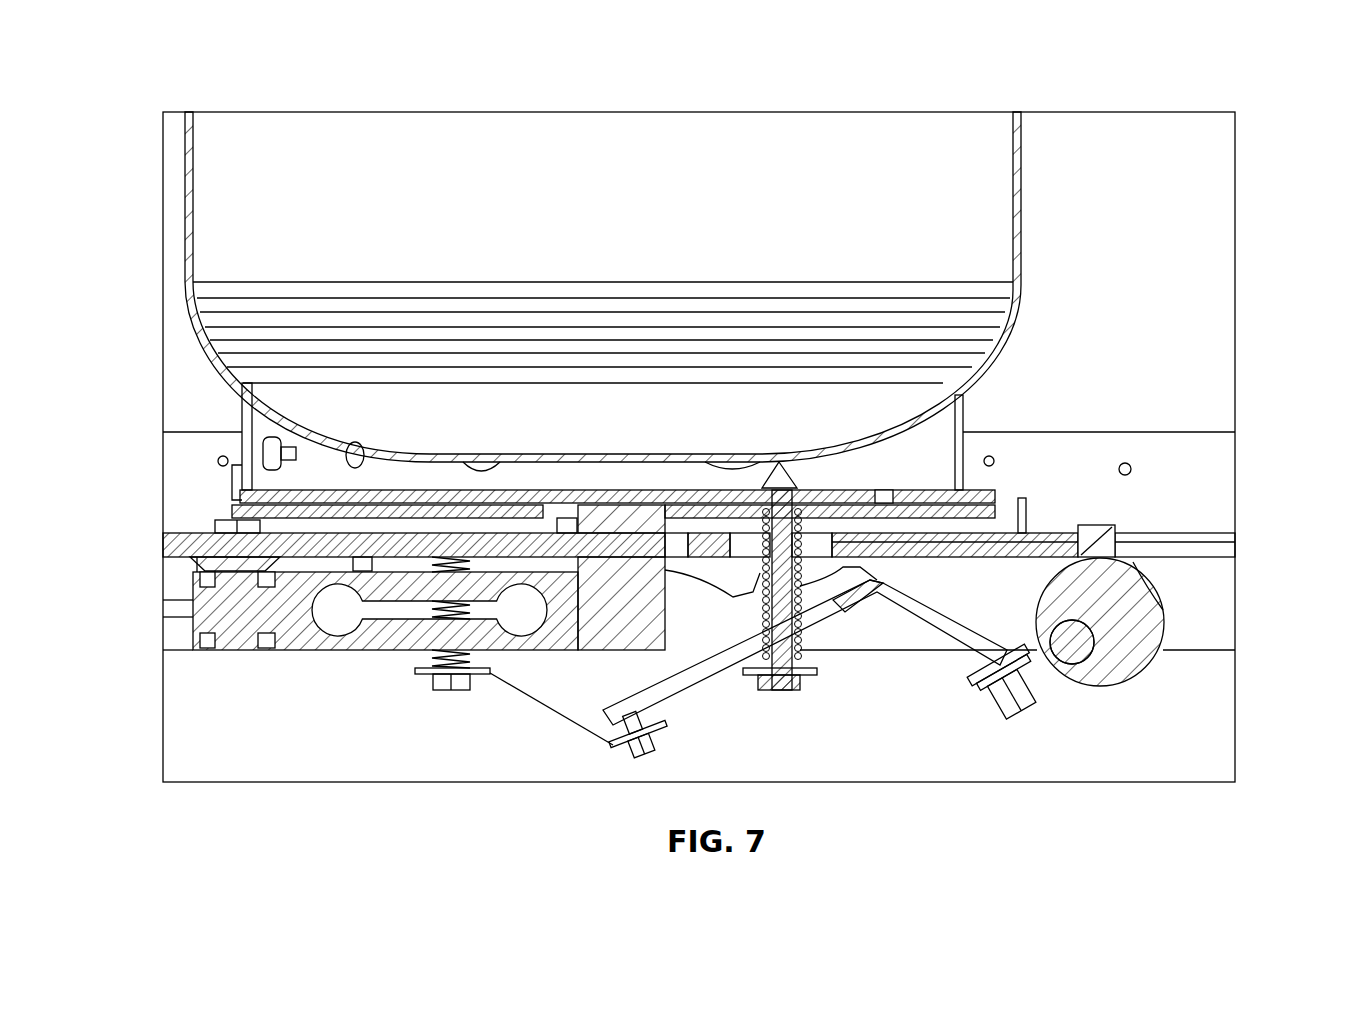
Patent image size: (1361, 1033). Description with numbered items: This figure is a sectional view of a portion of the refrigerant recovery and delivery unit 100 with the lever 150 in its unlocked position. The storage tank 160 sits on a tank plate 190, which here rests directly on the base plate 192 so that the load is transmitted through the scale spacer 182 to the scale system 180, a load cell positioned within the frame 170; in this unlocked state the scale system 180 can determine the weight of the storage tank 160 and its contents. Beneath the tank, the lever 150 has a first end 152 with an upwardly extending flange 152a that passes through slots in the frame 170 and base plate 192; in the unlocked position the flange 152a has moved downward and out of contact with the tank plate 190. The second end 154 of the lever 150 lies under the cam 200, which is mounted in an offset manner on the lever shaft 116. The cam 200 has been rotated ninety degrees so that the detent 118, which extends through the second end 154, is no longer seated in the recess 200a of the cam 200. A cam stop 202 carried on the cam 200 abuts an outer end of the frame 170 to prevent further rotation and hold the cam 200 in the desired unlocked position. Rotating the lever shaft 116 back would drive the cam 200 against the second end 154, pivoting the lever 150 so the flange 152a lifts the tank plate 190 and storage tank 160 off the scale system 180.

The refrigerant recovery and delivery unit 100 is at (1055, 152).
The storage tank 160 is at (1022, 252).
The tank plate 190 is at (373, 496).
The base plate 192 is at (995, 512).
The frame 170 is at (1045, 550).
The cam stop 202 is at (1117, 528).
The scale system 180 is at (382, 630).
The scale spacer 182 is at (605, 520).
The upwardly extending flange 152a is at (710, 640).
The first end 152 is at (652, 692).
The lever 150 is at (875, 588).
The cam 200 is at (1158, 628).
The recess 200a is at (1143, 625).
The lever shaft 116 is at (1078, 637).
The detent 118 is at (987, 670).
The second end 154 is at (1057, 673).